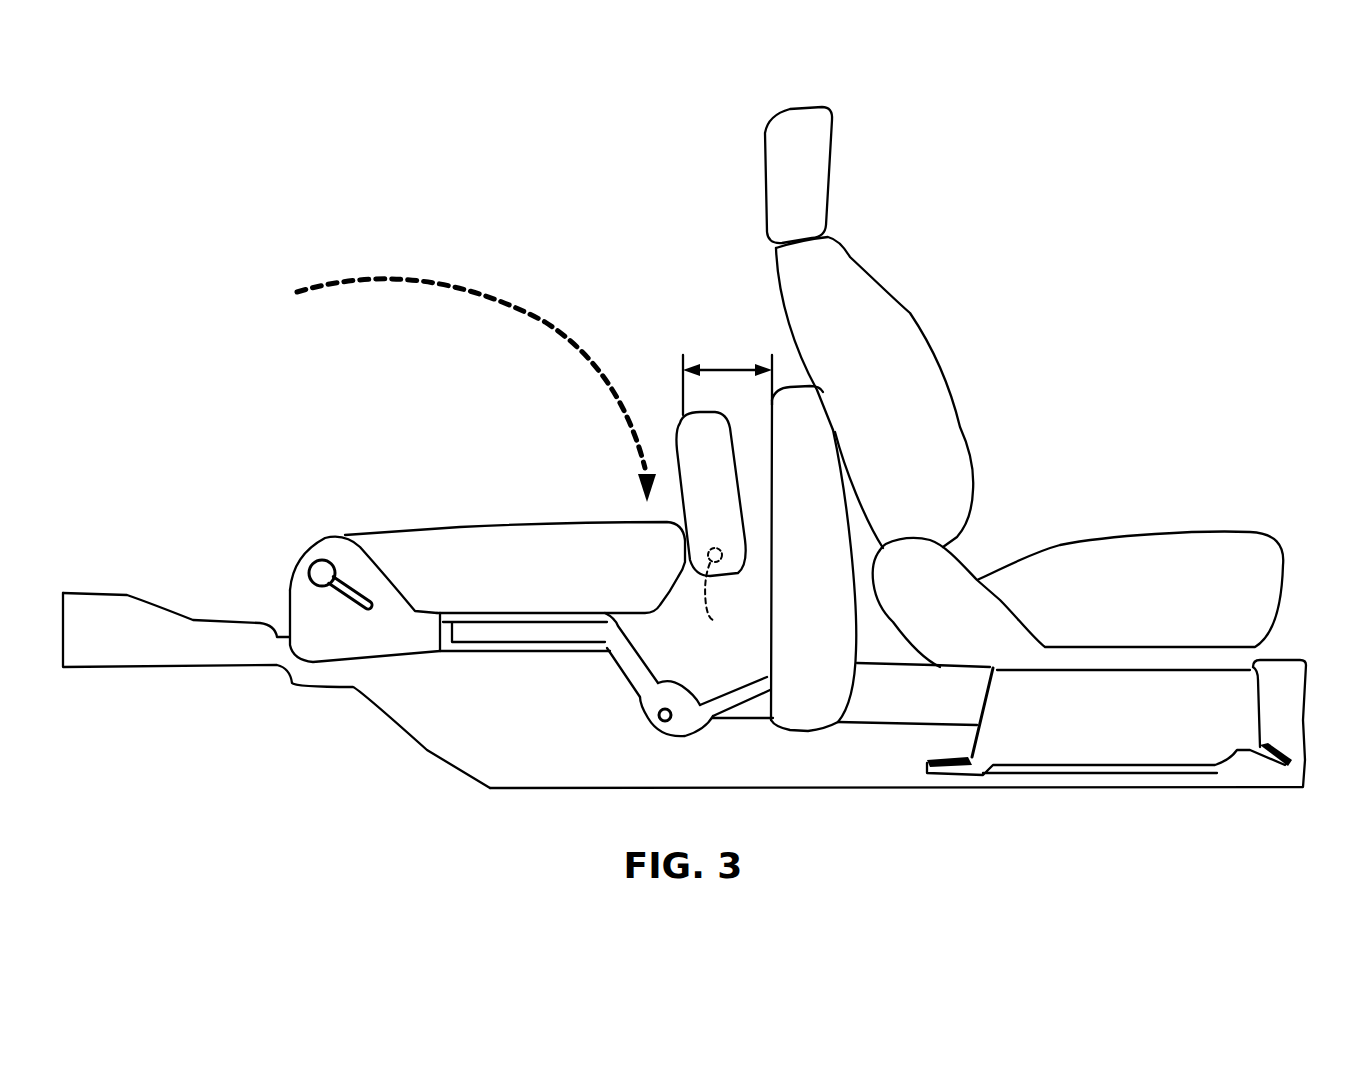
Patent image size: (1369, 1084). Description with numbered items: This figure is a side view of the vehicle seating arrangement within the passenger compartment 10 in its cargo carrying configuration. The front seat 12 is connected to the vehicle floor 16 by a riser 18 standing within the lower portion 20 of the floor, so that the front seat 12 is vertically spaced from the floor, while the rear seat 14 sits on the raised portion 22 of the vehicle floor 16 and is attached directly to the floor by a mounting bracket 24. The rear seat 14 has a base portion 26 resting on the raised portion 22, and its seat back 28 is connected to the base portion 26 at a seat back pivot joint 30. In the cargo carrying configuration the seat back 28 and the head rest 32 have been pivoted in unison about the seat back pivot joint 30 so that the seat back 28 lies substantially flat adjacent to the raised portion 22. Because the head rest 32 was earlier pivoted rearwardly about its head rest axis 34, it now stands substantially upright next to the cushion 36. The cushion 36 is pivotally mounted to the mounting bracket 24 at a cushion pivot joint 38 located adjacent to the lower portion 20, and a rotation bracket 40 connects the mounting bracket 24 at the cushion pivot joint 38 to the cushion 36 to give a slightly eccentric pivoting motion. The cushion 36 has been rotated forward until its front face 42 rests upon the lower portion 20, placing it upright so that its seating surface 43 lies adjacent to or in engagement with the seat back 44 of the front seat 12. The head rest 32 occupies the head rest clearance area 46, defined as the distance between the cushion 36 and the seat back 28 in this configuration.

The passenger compartment 10 is at (1020, 228).
The front seat 12 is at (925, 311).
The rear seat 14 is at (440, 518).
The vehicle floor 16 is at (420, 757).
The riser 18 is at (1260, 720).
The lower portion 20 is at (862, 768).
The raised portion 22 is at (513, 630).
The mounting bracket 24 is at (634, 661).
The base portion 26 is at (293, 595).
The seat back 28 is at (602, 543).
The seat back pivot joint 30 is at (320, 571).
The head rest 32 is at (732, 463).
The head rest axis 34 is at (713, 620).
The cushion 36 is at (854, 675).
The cushion pivot joint 38 is at (657, 715).
The rotation bracket 40 is at (743, 697).
The front face 42 is at (807, 731).
The seating surface 43 is at (845, 520).
The seat back 44 is at (775, 258).
The head rest clearance area 46 is at (730, 368).